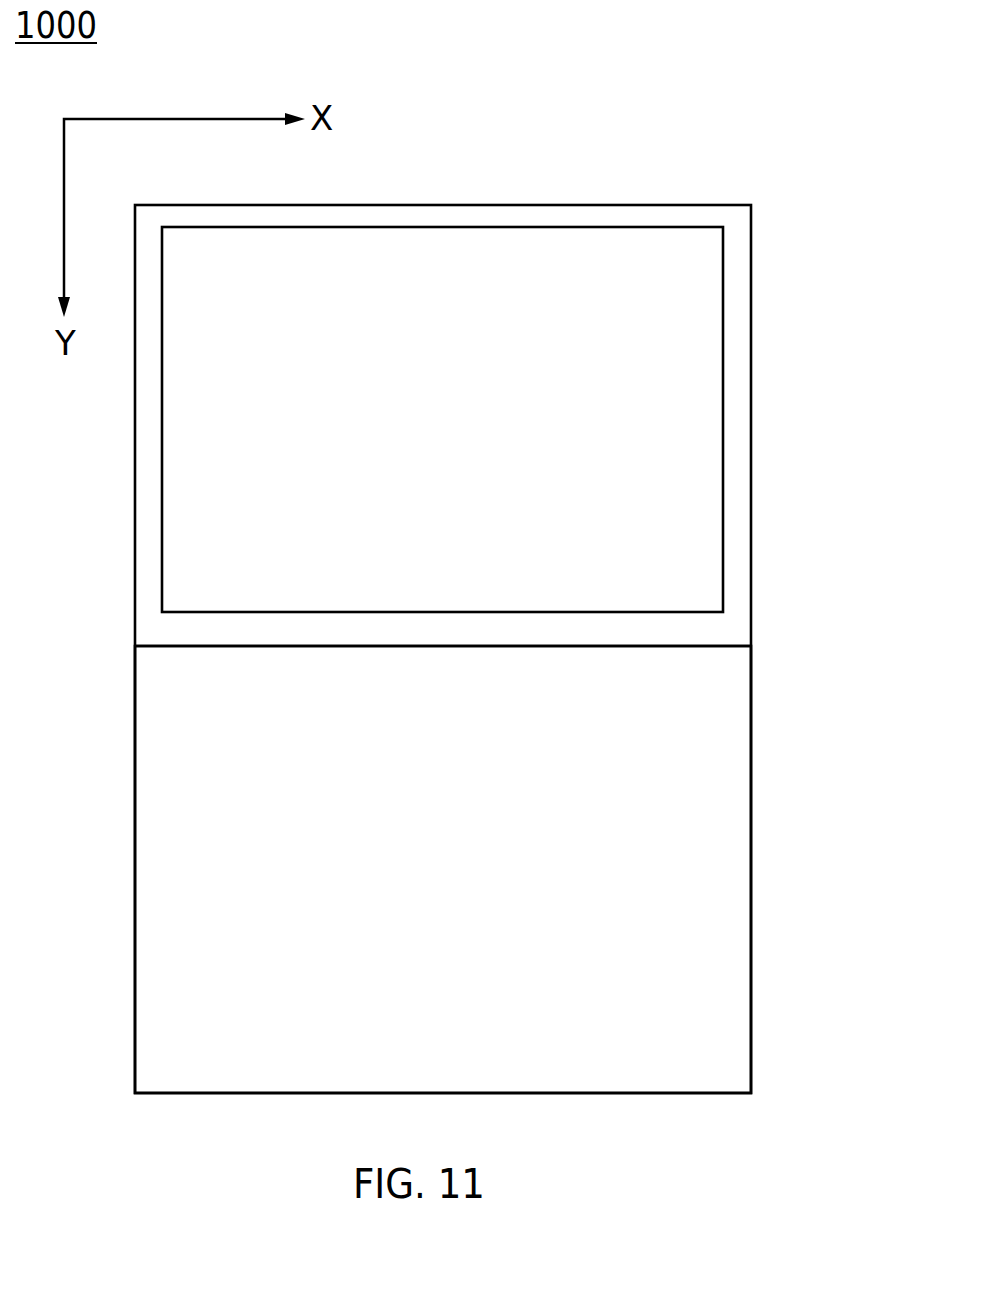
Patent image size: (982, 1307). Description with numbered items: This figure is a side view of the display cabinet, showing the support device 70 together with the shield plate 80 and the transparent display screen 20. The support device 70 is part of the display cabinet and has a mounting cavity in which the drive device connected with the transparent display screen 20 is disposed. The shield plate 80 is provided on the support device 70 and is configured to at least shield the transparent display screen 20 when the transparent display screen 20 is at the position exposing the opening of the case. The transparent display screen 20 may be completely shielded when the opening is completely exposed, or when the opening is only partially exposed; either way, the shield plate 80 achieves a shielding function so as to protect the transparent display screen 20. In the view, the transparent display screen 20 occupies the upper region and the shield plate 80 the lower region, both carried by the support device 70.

The support device 70 is at (124, 878).
The transparent display screen 20 is at (730, 315).
The shield plate 80 is at (715, 877).